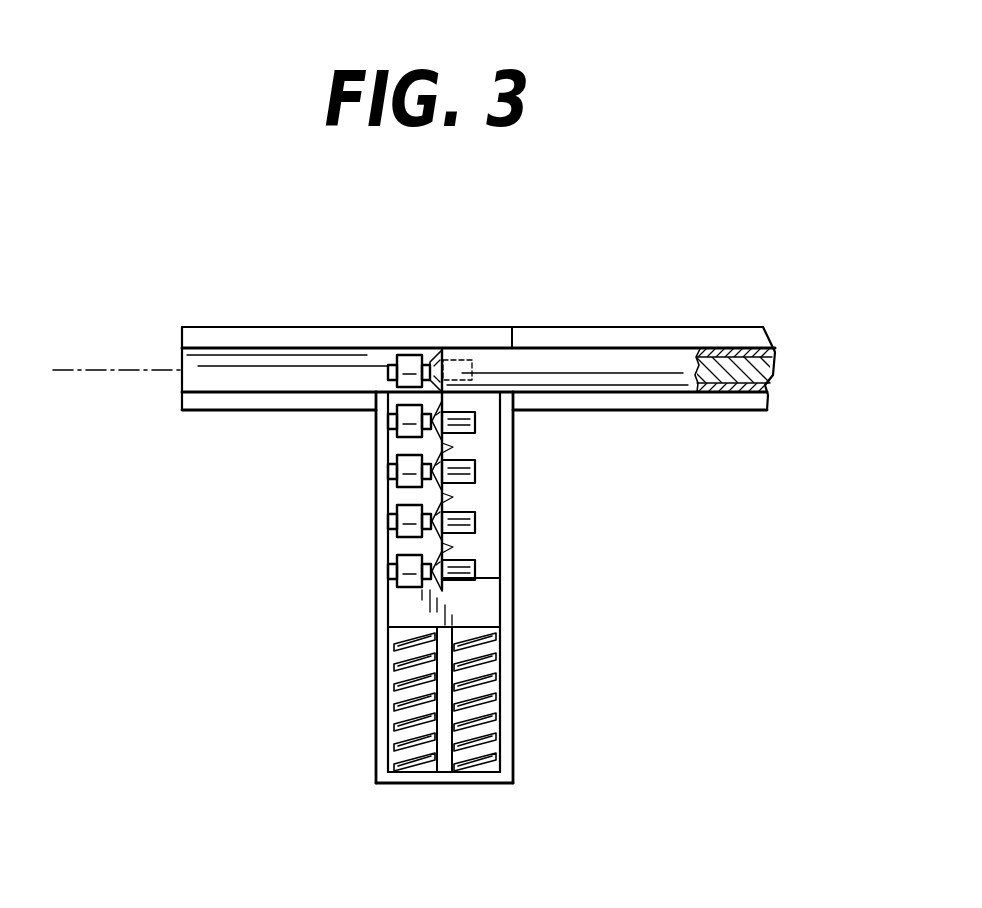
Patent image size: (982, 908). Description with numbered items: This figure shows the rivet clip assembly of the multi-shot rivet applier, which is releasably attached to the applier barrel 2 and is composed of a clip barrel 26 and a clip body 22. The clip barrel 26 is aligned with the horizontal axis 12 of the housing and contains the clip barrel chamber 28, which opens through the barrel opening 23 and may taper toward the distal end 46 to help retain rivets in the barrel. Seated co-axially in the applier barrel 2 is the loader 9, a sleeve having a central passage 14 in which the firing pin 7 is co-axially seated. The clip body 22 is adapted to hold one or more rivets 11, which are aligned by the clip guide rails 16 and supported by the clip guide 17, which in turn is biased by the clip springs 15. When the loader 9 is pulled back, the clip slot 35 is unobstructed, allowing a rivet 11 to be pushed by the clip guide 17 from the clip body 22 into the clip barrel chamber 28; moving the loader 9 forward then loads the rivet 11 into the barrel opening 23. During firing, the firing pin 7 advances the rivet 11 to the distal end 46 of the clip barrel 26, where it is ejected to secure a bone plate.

The applier barrel 2 is at (459, 355).
The firing pin 7 is at (772, 363).
The loader 9 is at (672, 362).
The rivet 11 is at (405, 355).
The horizontal axis 12 is at (107, 370).
The central passage 14 is at (733, 393).
The clip springs 15 is at (470, 755).
The clip guide rails 16 is at (440, 547).
The clip guide 17 is at (483, 603).
The clip body 22 is at (513, 530).
The barrel opening 23 is at (180, 360).
The clip barrel 26 is at (268, 327).
The clip barrel chamber 28 is at (283, 376).
The clip slot 35 is at (463, 402).
The distal end 46 is at (180, 400).